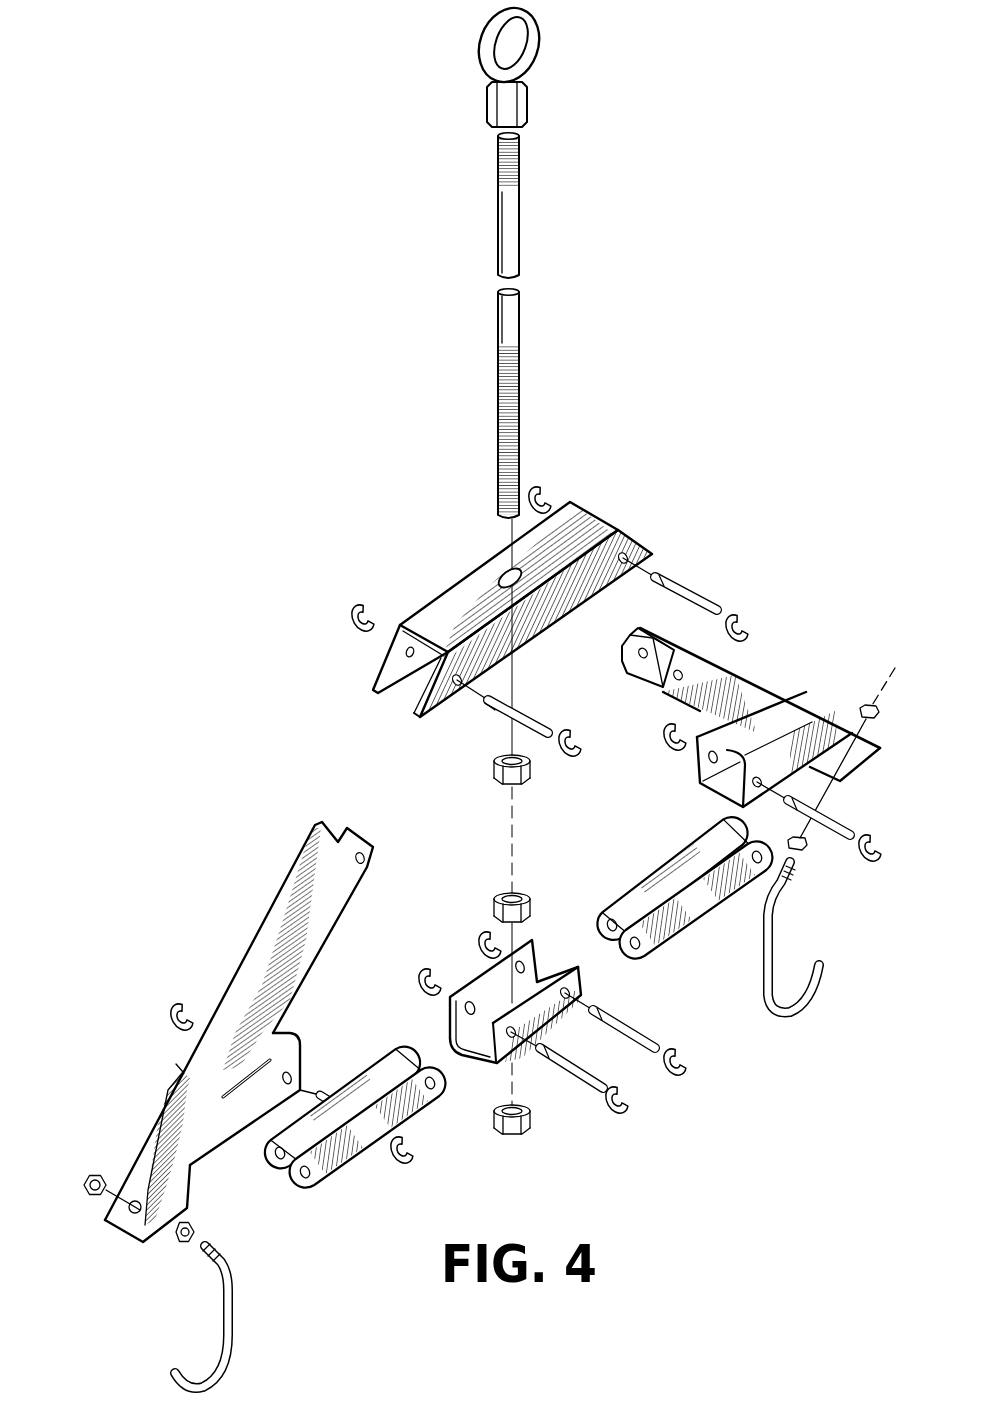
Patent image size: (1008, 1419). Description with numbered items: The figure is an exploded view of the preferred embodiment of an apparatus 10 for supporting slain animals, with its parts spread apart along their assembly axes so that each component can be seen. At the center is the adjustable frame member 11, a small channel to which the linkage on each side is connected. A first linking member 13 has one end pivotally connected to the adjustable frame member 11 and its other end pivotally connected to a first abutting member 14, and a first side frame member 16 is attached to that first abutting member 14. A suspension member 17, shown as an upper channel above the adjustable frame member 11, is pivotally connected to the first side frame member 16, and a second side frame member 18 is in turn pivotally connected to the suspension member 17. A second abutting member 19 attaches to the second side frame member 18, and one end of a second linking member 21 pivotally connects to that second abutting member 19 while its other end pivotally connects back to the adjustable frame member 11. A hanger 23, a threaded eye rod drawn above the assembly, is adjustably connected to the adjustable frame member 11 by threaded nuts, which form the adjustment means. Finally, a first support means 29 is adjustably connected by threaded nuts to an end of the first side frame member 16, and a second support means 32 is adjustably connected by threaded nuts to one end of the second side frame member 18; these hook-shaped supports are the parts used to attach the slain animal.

The apparatus 10 is at (733, 458).
The adjustable frame member 11 is at (538, 958).
The first linking member 13 is at (347, 1173).
The first abutting member 14 is at (227, 1150).
The first side frame member 16 is at (253, 928).
The suspension member 17 is at (437, 596).
The second side frame member 18 is at (770, 688).
The second abutting member 19 is at (827, 733).
The second linking member 21 is at (682, 933).
The hanger 23 is at (525, 219).
The first support means 29 is at (243, 1317).
The second support means 32 is at (790, 1020).